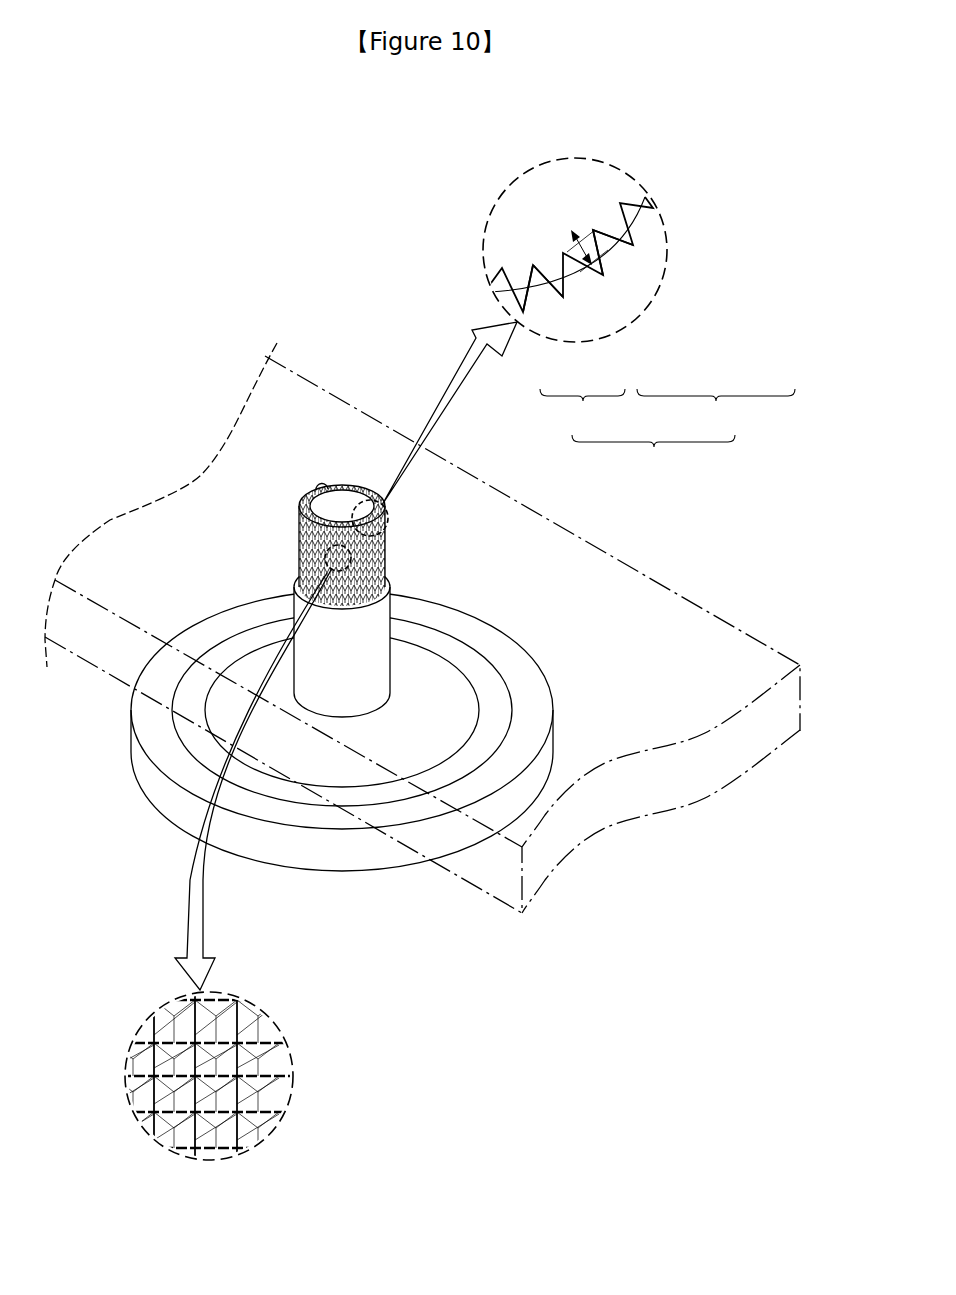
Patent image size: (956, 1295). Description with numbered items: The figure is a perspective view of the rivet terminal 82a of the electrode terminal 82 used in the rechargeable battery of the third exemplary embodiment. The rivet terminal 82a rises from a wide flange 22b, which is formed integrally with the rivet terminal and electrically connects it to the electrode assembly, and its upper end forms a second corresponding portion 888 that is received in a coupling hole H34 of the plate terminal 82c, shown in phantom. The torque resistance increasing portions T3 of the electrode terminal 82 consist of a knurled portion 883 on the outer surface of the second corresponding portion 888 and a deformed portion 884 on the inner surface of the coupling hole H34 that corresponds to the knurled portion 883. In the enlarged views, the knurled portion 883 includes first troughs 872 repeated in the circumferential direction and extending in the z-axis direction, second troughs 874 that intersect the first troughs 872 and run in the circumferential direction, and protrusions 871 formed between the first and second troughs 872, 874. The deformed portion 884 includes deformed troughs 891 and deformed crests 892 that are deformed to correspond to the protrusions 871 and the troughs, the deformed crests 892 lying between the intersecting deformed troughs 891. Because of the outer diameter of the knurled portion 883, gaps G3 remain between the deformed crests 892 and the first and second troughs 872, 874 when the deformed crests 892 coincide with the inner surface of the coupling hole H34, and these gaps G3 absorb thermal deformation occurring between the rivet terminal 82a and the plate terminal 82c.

The electrode terminal 82 is at (422, 575).
The rivet terminal 82a is at (398, 648).
The plate terminal 82c is at (203, 473).
The flange 22b is at (355, 872).
The coupling hole H34 is at (336, 488).
The gap G3 is at (560, 258).
The protrusion 871 is at (388, 523).
The first trough 872 is at (605, 248).
The second trough 874 is at (252, 1082).
The knurled portion 883 is at (716, 408).
The deformed portion 884 is at (582, 408).
The second corresponding portion 888 is at (325, 565).
The deformed trough 891 is at (523, 310).
The deformed crest 892 is at (563, 297).
The torque resistance increasing portion T3 is at (653, 456).